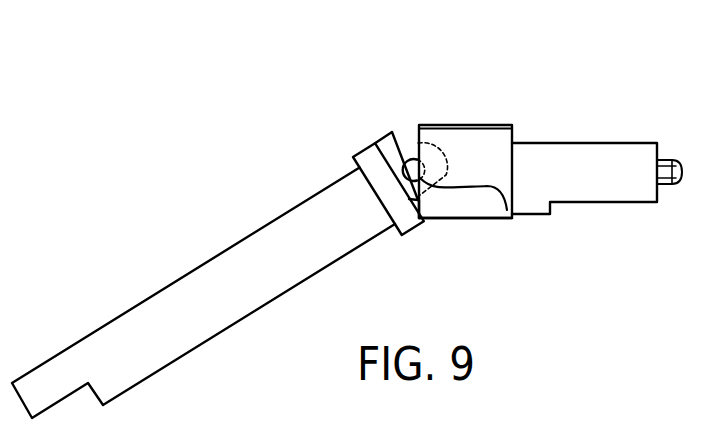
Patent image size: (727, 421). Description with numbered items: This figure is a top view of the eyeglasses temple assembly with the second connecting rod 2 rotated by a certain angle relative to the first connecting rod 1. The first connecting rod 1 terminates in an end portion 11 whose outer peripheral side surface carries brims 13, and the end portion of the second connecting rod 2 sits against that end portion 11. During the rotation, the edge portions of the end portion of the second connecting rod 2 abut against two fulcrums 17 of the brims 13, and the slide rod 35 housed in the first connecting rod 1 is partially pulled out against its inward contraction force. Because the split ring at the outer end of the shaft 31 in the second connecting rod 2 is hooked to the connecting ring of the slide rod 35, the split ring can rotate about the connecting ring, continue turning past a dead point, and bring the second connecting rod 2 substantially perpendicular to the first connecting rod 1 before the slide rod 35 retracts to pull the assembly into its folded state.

The first connecting rod 1 is at (552, 163).
The second connecting rod 2 is at (182, 300).
The end portion 11 is at (447, 138).
The brims 13 is at (473, 219).
The fulcrums 17 is at (422, 219).
The shaft 31 is at (413, 148).
The slide rod 35 is at (507, 210).